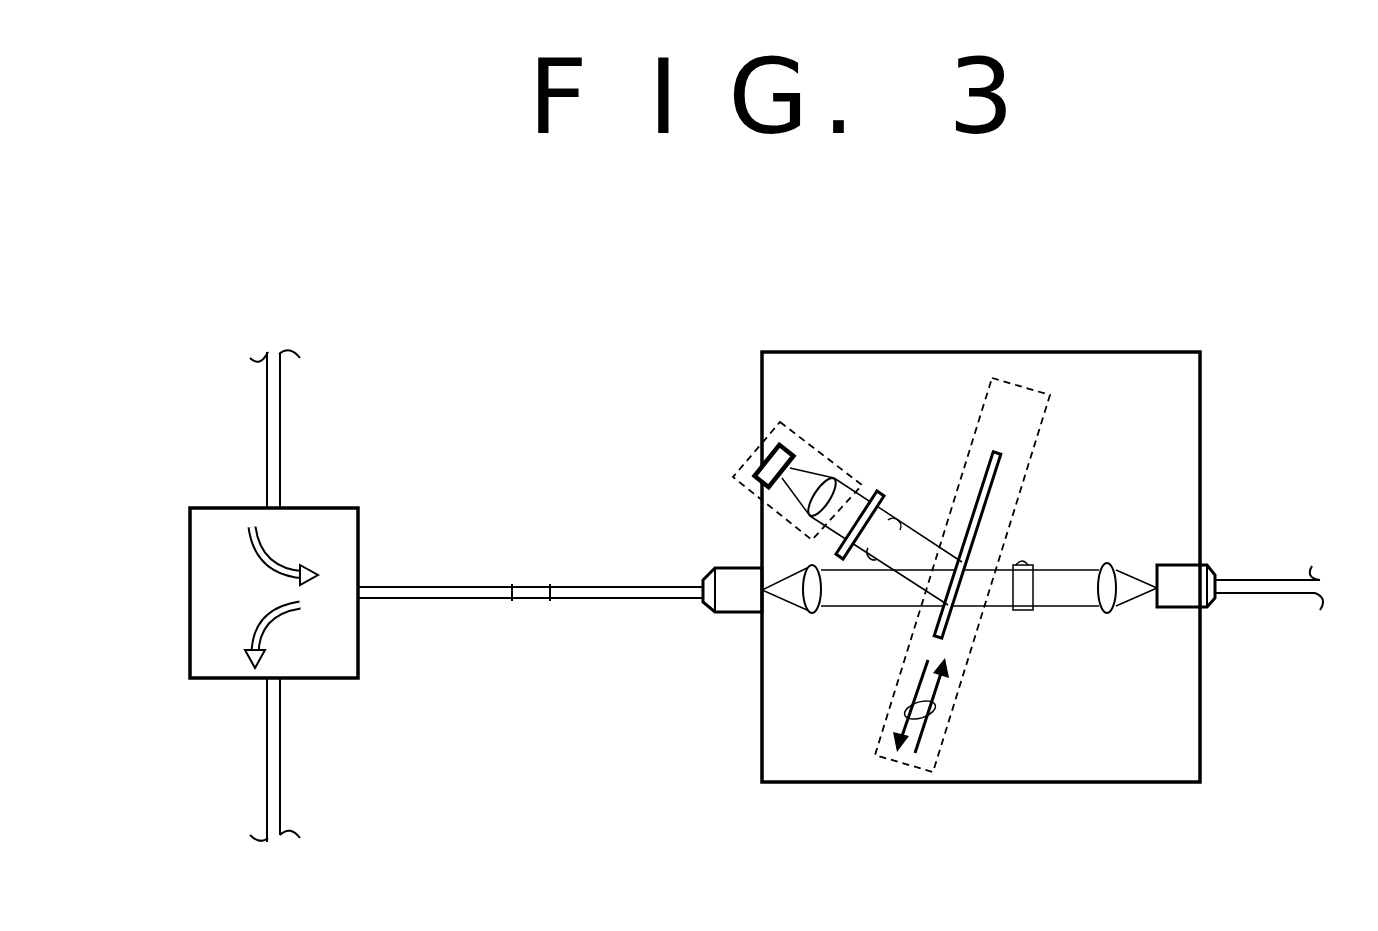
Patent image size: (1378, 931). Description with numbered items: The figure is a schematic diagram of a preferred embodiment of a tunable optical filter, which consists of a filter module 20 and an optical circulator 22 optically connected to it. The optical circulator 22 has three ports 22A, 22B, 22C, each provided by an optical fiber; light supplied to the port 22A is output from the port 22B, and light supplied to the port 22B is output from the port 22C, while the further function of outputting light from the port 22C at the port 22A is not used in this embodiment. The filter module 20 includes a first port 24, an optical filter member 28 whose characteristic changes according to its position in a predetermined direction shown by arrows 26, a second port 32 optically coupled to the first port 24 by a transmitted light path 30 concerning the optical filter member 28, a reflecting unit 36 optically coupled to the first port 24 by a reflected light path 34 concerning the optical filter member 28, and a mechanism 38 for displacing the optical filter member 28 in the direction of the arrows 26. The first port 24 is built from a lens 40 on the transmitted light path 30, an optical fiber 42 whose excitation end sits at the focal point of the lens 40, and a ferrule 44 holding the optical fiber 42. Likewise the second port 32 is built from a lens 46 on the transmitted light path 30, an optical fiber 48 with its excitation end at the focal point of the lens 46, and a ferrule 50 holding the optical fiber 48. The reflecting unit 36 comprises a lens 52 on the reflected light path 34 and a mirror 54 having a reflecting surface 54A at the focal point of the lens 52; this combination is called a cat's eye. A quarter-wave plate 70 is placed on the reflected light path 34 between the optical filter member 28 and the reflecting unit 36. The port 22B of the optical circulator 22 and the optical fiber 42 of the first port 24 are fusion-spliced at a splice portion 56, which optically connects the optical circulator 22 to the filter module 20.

The filter module 20 is at (956, 340).
The optical circulator 22 is at (346, 496).
The port 22A is at (282, 412).
The port 22B is at (443, 586).
The port 22C is at (282, 748).
The first port 24 is at (736, 622).
The arrows 26 is at (905, 708).
The optical filter member 28 is at (990, 485).
The transmitted light path 30 is at (1022, 612).
The second port 32 is at (1220, 556).
The reflected light path 34 is at (872, 572).
The reflecting unit 36 is at (735, 476).
The mechanism 38 is at (957, 727).
The lens 40 is at (812, 613).
The optical fiber 42 is at (600, 584).
The ferrule 44 is at (722, 607).
The lens 46 is at (1108, 614).
The optical fiber 48 is at (1287, 594).
The ferrule 50 is at (1190, 607).
The lens 52 is at (834, 480).
The mirror 54 is at (764, 440).
The reflecting surface 54A is at (770, 490).
The splice portion 56 is at (514, 598).
The quarter-wave plate 70 is at (882, 492).